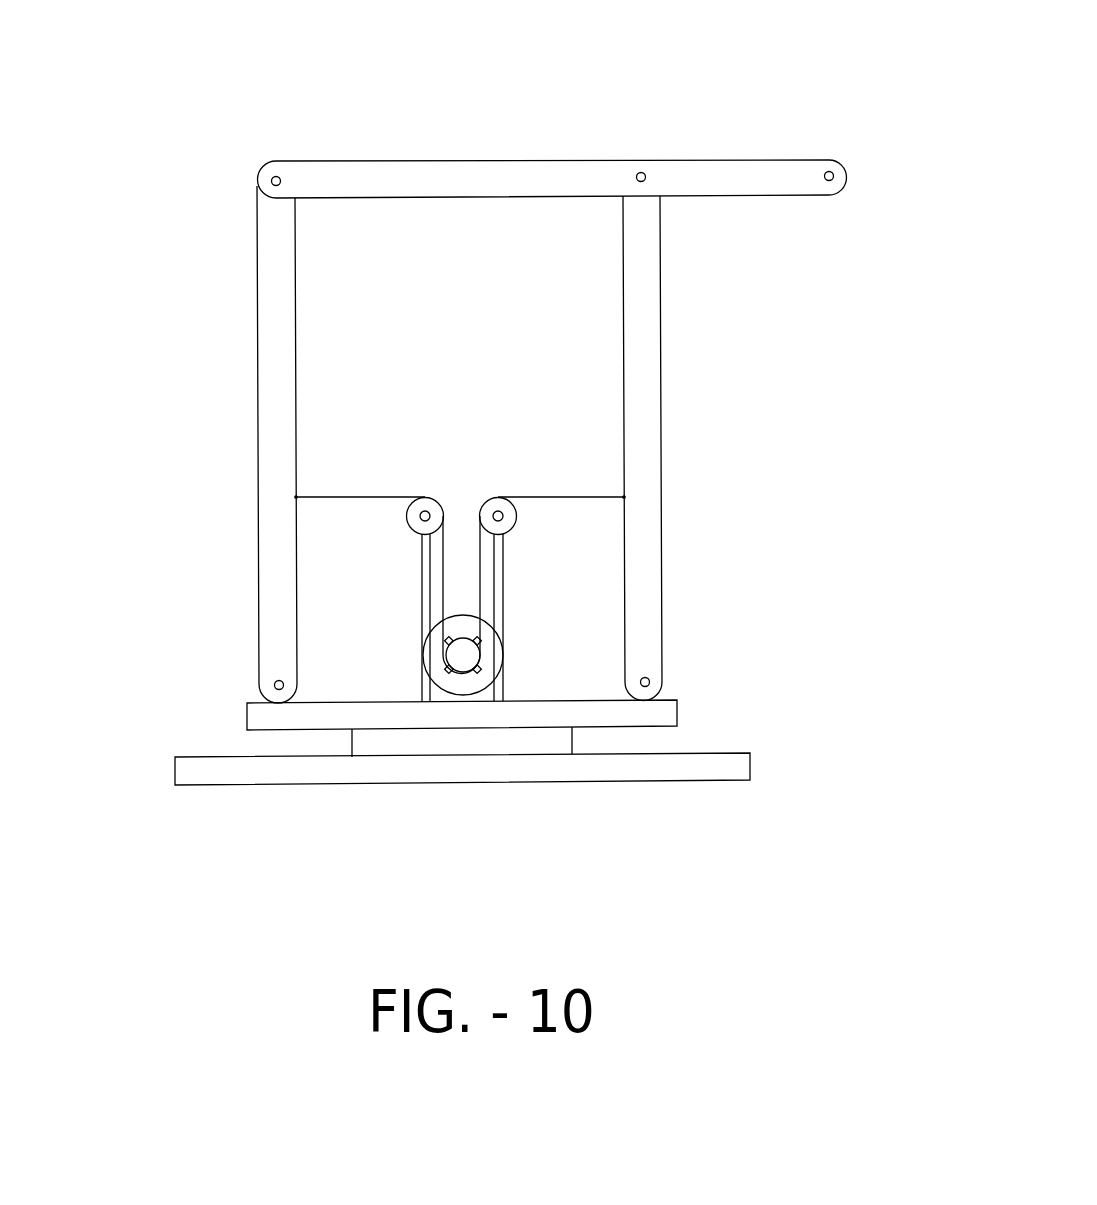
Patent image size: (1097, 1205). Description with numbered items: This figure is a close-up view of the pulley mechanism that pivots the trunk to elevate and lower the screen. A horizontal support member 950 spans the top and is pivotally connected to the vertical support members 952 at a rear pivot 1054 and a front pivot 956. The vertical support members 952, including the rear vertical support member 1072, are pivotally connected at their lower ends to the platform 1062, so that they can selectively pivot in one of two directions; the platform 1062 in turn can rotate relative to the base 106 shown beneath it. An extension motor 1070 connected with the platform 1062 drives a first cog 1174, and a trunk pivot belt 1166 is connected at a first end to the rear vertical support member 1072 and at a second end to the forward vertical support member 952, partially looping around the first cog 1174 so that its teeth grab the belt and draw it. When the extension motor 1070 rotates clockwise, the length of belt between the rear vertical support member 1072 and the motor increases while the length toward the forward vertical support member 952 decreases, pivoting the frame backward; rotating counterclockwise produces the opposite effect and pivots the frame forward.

The horizontal support member 950 is at (437, 172).
The front pivot 956 is at (642, 172).
The rear pivot 1054 is at (263, 168).
The rear vertical support member 1072 is at (267, 425).
The vertical support member 952 is at (652, 420).
The trunk pivot belt 1166 is at (513, 497).
The extension motor 1070 is at (427, 655).
The first cog 1174 is at (477, 660).
The platform 1062 is at (680, 711).
The base 106 is at (185, 775).